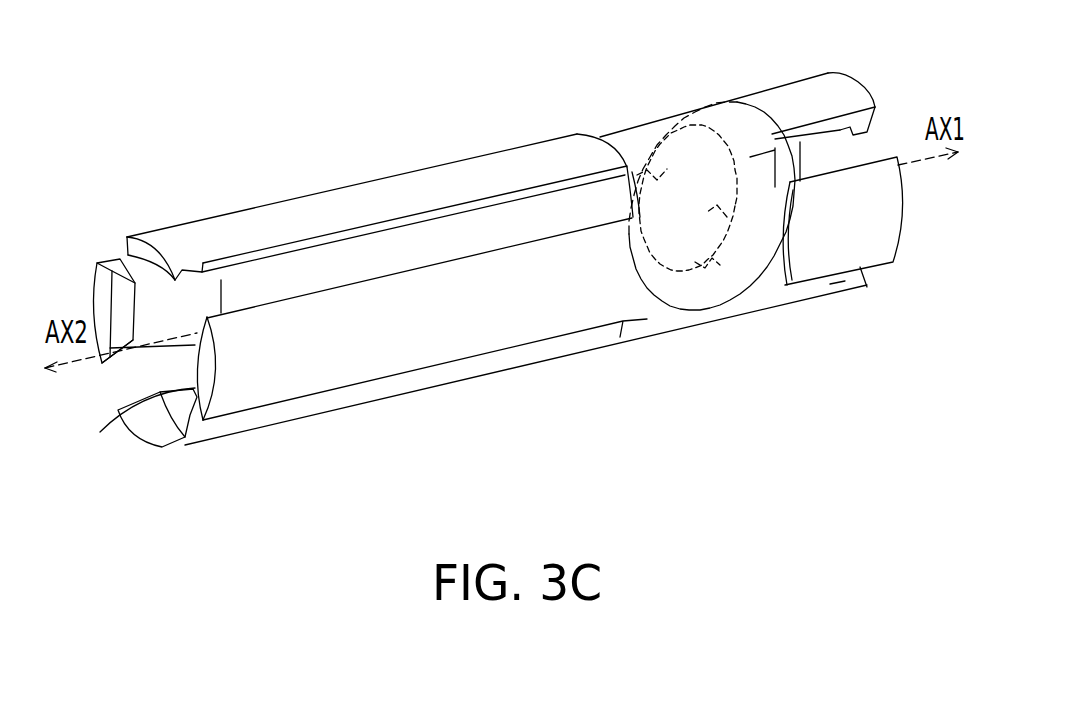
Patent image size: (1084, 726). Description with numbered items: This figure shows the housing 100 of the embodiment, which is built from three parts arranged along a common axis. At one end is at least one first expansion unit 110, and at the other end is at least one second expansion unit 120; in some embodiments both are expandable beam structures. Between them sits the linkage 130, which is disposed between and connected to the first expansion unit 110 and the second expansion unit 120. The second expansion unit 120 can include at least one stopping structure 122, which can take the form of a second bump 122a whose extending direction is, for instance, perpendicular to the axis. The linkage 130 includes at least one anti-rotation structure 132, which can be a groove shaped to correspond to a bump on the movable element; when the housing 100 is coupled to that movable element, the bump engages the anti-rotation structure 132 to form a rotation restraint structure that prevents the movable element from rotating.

The housing 100 is at (200, 165).
The first expansion unit 110 is at (168, 262).
The second expansion unit 120 is at (784, 90).
The stopping structure 122 is at (893, 75).
The second bump 122a is at (867, 127).
The linkage 130 is at (628, 148).
The anti-rotation structure 132 is at (728, 249).